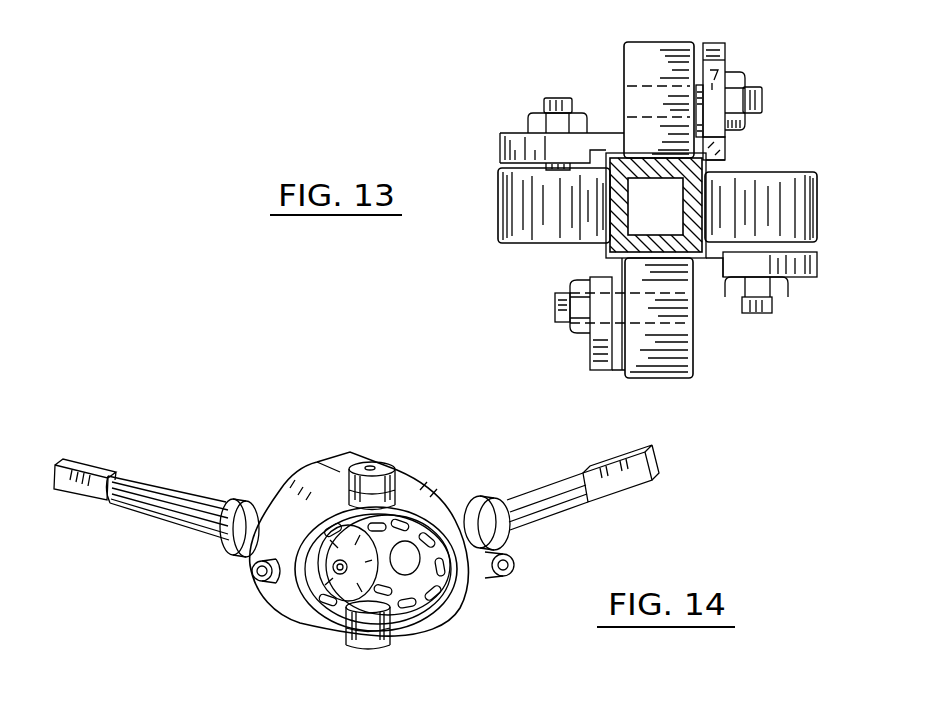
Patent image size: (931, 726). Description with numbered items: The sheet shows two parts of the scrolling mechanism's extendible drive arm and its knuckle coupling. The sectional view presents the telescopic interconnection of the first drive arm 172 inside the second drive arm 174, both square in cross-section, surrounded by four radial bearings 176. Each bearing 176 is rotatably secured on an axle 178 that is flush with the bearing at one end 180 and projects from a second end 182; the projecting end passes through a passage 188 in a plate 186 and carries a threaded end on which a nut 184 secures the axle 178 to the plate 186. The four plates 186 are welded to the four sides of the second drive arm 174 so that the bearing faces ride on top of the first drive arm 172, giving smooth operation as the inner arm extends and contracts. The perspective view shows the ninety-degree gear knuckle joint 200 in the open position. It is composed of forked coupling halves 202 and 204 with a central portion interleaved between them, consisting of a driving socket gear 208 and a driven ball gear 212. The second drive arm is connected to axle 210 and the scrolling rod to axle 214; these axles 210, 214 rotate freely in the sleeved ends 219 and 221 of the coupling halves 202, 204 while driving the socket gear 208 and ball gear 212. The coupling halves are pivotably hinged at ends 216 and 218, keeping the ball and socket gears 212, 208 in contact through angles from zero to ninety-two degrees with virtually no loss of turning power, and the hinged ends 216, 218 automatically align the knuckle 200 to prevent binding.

In FIG. 13, the first drive arm 172 is at (623, 242).
In FIG. 13, the second drive arm 174 is at (725, 157).
In FIG. 13, the radial bearing 176 is at (657, 58).
In FIG. 13, the axle 178 is at (762, 102).
In FIG. 13, the first end of axle 180 is at (623, 97).
In FIG. 13, the second end of axle 182 is at (697, 93).
In FIG. 13, the nut 184 is at (743, 75).
In FIG. 13, the plate 186 is at (725, 43).
In FIG. 13, the passage 188 is at (727, 63).
In FIG. 14, the 90° gear knuckle joint 200 is at (230, 395).
In FIG. 14, the forked coupling half 202 is at (312, 487).
In FIG. 14, the forked coupling half 204 is at (413, 497).
In FIG. 14, the driving socket gear 208 is at (303, 623).
In FIG. 14, the axle 210 is at (105, 480).
In FIG. 14, the driven ball gear 212 is at (450, 615).
In FIG. 14, the axle 214 is at (610, 478).
In FIG. 14, the pivotably hinged end 216 is at (370, 463).
In FIG. 14, the pivotably hinged end 218 is at (362, 645).
In FIG. 14, the sleeved end 219 is at (248, 502).
In FIG. 14, the sleeved end 221 is at (477, 503).